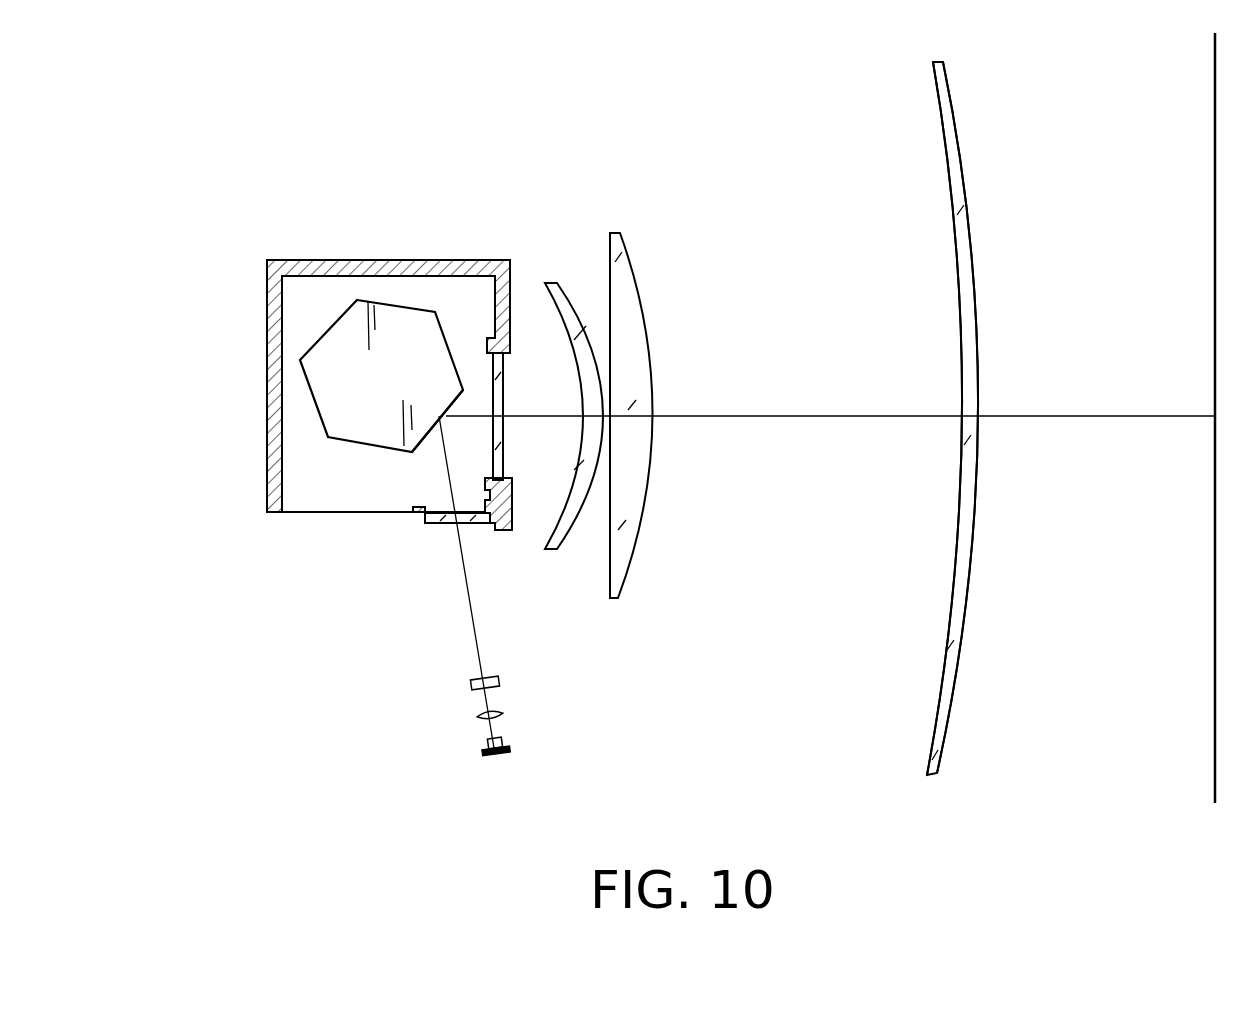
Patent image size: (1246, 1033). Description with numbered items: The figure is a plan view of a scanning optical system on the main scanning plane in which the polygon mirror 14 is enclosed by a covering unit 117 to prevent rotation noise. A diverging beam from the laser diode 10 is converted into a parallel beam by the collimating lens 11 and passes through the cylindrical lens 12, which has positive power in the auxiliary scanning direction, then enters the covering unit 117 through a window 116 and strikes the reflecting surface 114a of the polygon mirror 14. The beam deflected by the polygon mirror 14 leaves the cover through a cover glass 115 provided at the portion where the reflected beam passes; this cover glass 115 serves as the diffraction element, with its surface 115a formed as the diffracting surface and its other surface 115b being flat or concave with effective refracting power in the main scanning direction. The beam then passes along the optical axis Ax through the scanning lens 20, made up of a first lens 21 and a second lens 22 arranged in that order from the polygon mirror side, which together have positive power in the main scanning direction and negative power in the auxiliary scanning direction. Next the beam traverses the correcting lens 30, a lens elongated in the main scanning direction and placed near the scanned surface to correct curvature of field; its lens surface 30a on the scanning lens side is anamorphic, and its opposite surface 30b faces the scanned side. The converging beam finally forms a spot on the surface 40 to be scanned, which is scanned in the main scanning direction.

The laser diode 10 is at (488, 748).
The collimating lens 11 is at (503, 710).
The cylindrical lens 12 is at (471, 683).
The polygon mirror 14 is at (349, 350).
The reflecting surface 114a is at (427, 437).
The cover glass 115 is at (555, 390).
The surface 115a is at (493, 383).
The other surface 115b is at (548, 455).
The window 116 is at (445, 523).
The covering unit 117 is at (267, 418).
The scanning lens 20 is at (569, 440).
The first lens 21 is at (561, 544).
The second lens 22 is at (612, 580).
The correcting lens 30 is at (931, 776).
The lens surface 30a is at (941, 672).
The exit surface of long lens 30b is at (948, 727).
The surface to be scanned 40 is at (1215, 700).
The optical axis Ax is at (808, 416).